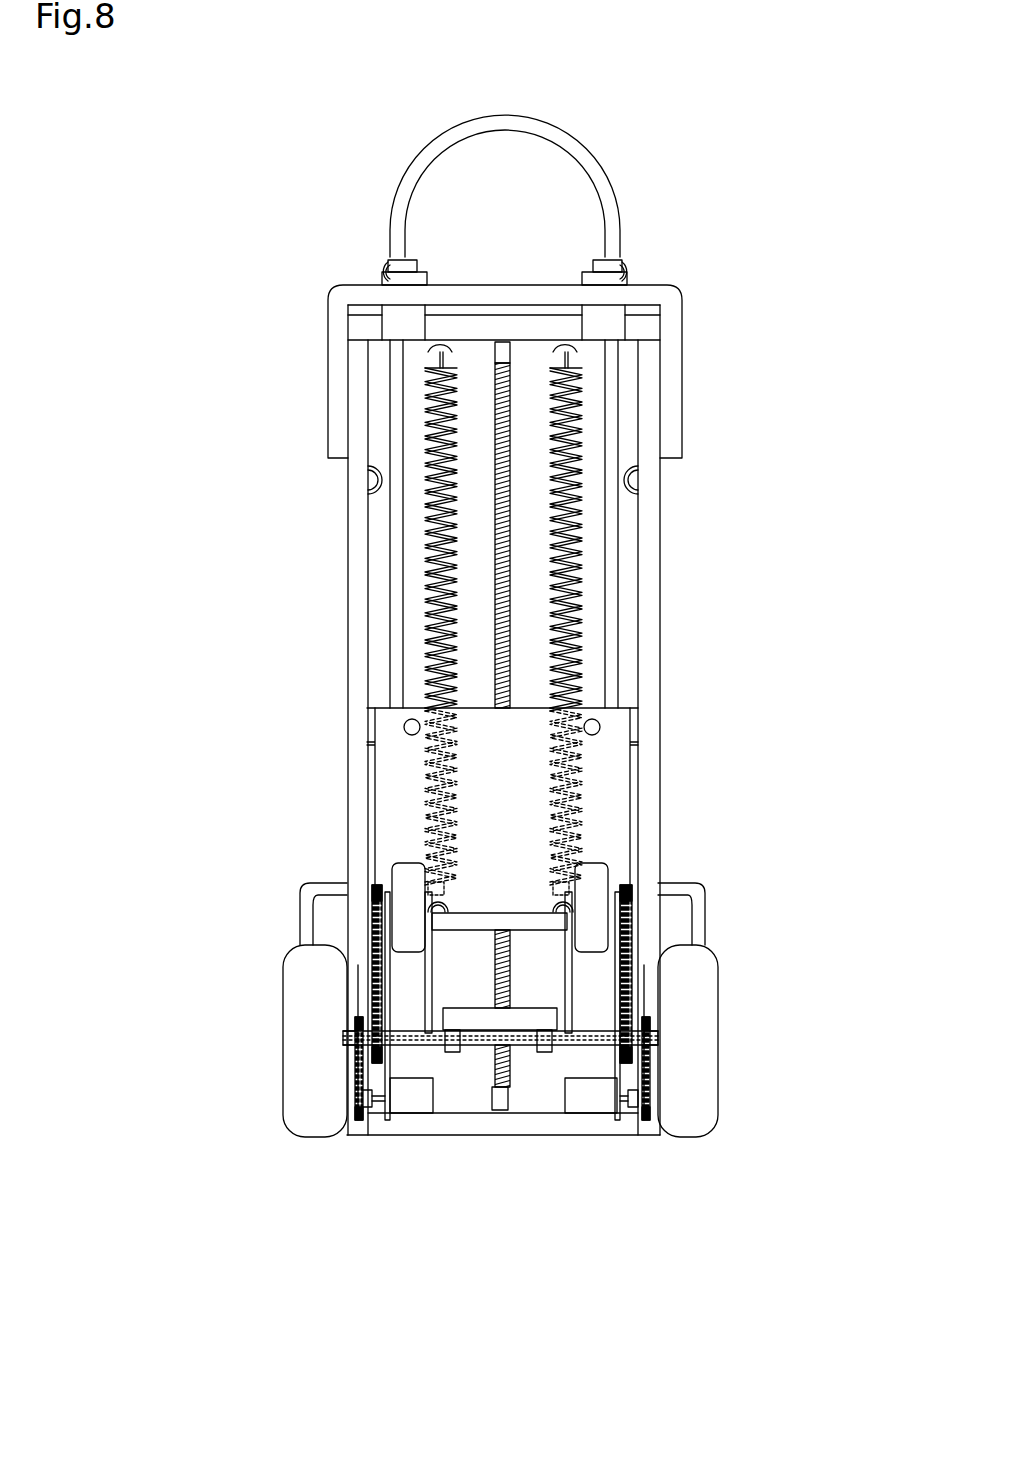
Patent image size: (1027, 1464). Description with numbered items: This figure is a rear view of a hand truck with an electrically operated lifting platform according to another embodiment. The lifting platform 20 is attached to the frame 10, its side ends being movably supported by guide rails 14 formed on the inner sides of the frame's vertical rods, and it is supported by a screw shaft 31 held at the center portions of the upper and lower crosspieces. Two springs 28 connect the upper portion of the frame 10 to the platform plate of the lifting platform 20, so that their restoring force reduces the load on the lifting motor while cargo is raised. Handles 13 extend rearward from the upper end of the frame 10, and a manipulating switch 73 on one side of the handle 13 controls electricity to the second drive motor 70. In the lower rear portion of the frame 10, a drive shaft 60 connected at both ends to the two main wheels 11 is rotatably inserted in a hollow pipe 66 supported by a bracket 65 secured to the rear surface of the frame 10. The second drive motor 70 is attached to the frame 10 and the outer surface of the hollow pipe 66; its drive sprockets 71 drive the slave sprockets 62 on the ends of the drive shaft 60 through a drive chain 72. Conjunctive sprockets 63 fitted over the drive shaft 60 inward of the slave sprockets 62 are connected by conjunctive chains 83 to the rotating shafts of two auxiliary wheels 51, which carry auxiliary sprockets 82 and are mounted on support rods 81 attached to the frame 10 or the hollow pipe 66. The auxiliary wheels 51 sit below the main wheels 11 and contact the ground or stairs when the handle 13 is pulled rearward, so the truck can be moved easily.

The frame 10 is at (672, 556).
The wheels 11 is at (302, 1082).
The handle 13 is at (668, 303).
The guide rails 14 is at (628, 680).
The lifting platform 20 is at (607, 799).
The springs 28 is at (577, 615).
The screw shaft 31 is at (510, 465).
The auxiliary wheels 51 is at (598, 878).
The drive shaft 60 is at (473, 1037).
The slave sprockets 62 is at (647, 1020).
The conjunctive sprockets 63 is at (573, 1100).
The bracket 65 is at (357, 983).
The hollow pipe 66 is at (532, 1052).
The second drive motor 70 is at (617, 1063).
The drive sprockets 71 is at (647, 1073).
The drive chain 72 is at (647, 1080).
The manipulating switch 73 is at (612, 262).
The support rods 81 is at (427, 965).
The auxiliary sprockets 82 is at (627, 900).
The conjunctive chains 83 is at (627, 963).